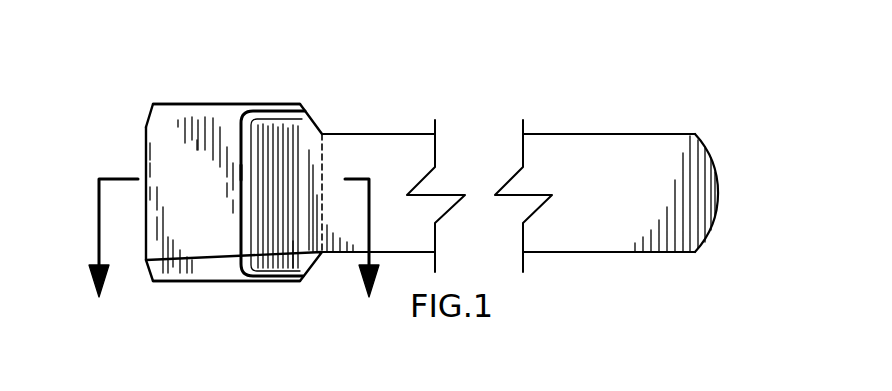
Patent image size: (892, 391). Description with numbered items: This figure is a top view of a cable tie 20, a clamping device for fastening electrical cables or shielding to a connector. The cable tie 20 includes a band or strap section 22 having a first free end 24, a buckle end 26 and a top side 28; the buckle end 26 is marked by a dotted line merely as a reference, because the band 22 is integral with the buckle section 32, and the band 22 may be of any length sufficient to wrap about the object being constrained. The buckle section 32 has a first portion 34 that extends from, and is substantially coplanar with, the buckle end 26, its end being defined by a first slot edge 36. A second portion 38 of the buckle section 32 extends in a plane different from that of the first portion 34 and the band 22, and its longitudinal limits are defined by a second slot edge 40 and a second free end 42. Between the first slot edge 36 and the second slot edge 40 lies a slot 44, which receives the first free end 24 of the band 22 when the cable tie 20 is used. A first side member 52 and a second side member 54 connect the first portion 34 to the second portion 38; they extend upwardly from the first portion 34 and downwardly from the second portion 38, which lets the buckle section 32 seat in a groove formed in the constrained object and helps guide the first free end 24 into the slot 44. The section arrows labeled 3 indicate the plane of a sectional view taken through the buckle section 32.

The cable tie 20 is at (439, 57).
The band or strap section 22 is at (546, 124).
The first free end 24 is at (698, 158).
The buckle end 26 is at (322, 152).
The top side 28 is at (555, 152).
The buckle section 32 is at (204, 72).
The first portion 34 is at (293, 241).
The first slot edge 36 is at (253, 224).
The second portion 38 is at (197, 140).
The second slot edge 40 is at (240, 172).
The second free end 42 is at (146, 151).
The slot 44 is at (243, 229).
The first side member 52 is at (170, 103).
The second side member 54 is at (220, 284).
The section line 3- 3 is at (234, 257).